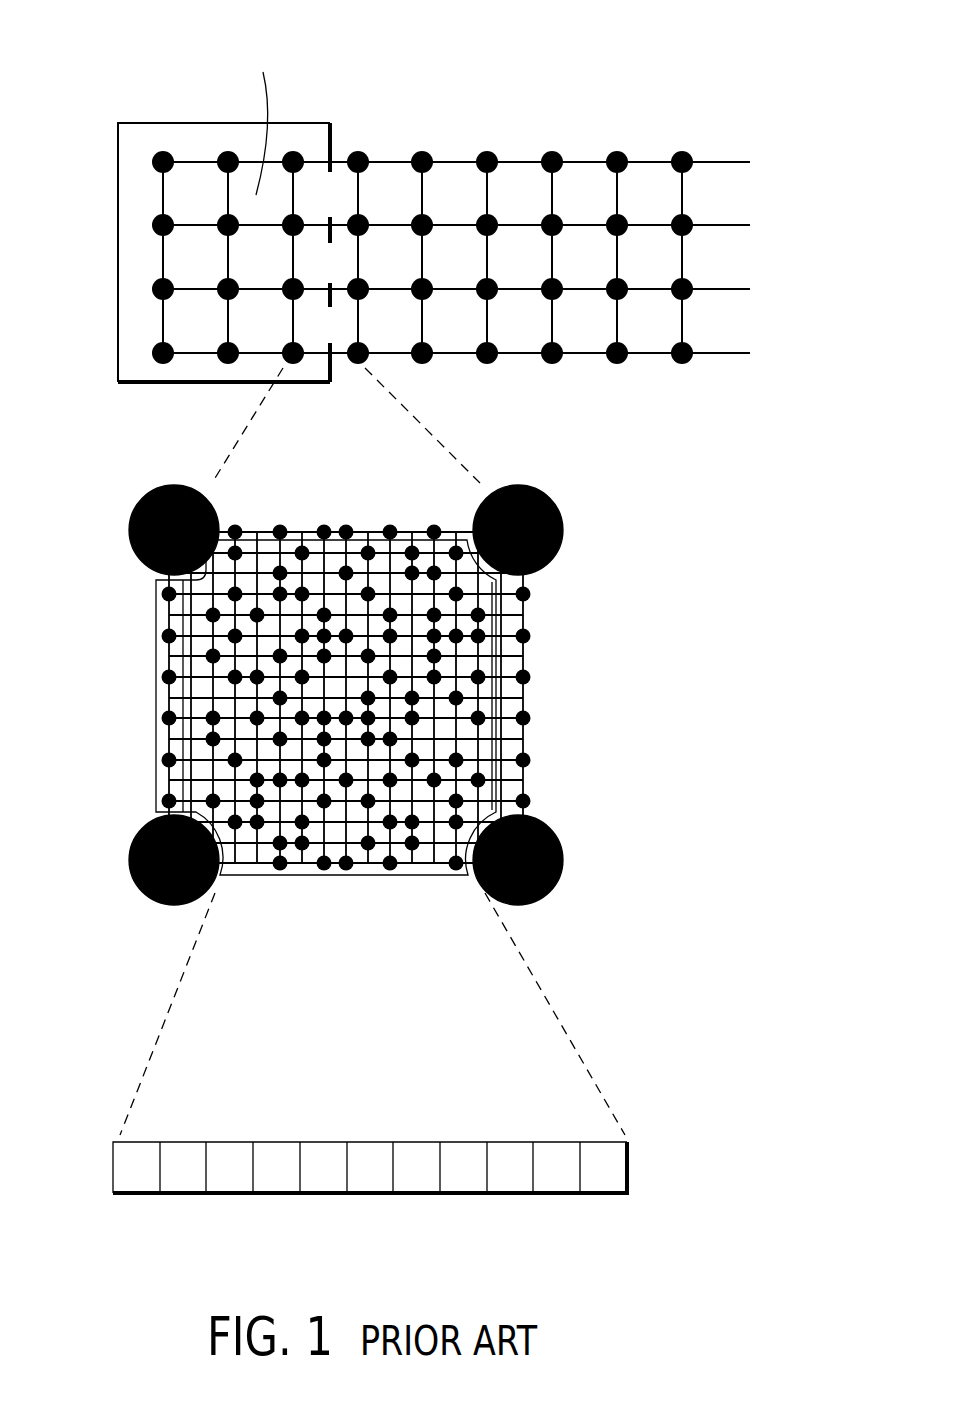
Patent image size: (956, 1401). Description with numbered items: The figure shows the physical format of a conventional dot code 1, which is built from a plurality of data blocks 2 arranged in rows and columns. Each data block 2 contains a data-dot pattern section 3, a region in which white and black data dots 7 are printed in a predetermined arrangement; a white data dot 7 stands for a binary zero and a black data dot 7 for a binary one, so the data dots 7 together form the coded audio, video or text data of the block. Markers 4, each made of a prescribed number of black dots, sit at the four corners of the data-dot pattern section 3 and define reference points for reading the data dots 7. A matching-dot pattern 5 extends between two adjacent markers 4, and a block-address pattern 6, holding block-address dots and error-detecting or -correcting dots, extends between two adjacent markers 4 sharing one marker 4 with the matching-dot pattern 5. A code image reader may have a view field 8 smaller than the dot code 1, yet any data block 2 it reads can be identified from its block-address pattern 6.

The dot code 1 is at (472, 156).
The data block 2 is at (387, 178).
The data-dot pattern section 3 is at (495, 646).
The marker 4 is at (561, 862).
The matching-dot pattern 5 is at (158, 637).
The block-address pattern 6 is at (75, 1130).
The data dot 7 is at (462, 753).
The view field 8 is at (118, 184).